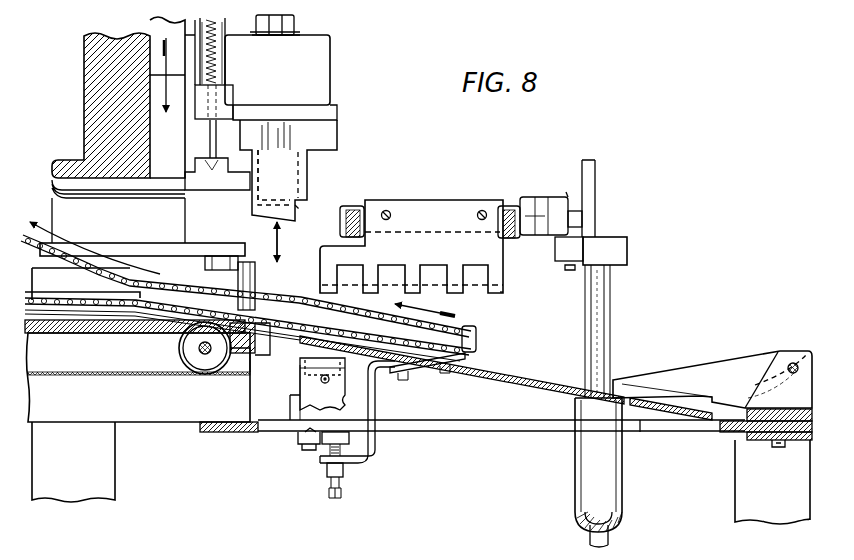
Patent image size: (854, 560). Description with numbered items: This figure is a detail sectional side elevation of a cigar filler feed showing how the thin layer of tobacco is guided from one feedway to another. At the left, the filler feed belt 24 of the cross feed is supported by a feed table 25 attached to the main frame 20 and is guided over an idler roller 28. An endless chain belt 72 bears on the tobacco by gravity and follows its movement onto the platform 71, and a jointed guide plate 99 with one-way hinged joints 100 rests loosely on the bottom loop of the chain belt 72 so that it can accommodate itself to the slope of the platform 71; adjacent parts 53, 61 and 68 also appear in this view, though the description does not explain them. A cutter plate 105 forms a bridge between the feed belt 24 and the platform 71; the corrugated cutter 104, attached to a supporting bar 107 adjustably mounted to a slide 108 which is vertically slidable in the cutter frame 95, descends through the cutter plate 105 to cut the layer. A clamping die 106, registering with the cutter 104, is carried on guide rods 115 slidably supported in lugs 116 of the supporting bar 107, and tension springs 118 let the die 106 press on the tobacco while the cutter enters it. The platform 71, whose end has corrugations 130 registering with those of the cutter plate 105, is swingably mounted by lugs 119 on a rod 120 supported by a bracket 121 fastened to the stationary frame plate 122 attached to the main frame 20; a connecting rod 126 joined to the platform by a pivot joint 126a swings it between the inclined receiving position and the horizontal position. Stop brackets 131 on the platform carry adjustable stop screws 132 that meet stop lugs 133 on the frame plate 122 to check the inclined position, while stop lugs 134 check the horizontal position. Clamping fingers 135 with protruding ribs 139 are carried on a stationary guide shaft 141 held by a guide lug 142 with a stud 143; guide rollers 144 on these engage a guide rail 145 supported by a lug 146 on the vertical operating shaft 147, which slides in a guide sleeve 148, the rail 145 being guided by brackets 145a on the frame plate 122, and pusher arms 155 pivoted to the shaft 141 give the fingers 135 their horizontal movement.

The main frame 20 is at (110, 484).
The filler feed belt 24 is at (195, 372).
The feed table 25 is at (128, 374).
The idler roller 28 is at (182, 352).
The guide block 53 is at (246, 270).
The post 61 is at (210, 262).
The rail 68 is at (158, 248).
The platform 71 is at (502, 378).
The endless chain belt 72 is at (100, 268).
The cutter frame 95 is at (88, 58).
The jointed guide plate 99 is at (438, 326).
The hinged joints 100 is at (296, 296).
The corrugated cutter 104 is at (328, 135).
The cutter plate 105 is at (248, 345).
The clamping die 106 is at (258, 205).
The supporting bar 107 is at (338, 110).
The slide 108 is at (152, 24).
The guide rods 115 is at (216, 140).
The lugs 116 is at (232, 95).
The tension springs 118 is at (222, 56).
The lugs 119 is at (728, 357).
The rod 120 is at (798, 362).
The bracket 121 is at (765, 380).
The stationary frame plate 122 is at (200, 428).
The connecting rod 126 is at (302, 402).
The pivot joint 126a is at (345, 378).
The corrugations 130 is at (305, 380).
The stop brackets 131 is at (375, 408).
The adjustable stop screws 132 is at (342, 492).
The stop lugs 133 is at (320, 448).
The stop lugs 134 is at (298, 440).
The clamping fingers 135 is at (458, 193).
The protruding ribs 139 is at (498, 292).
The stationary guide shaft 141 is at (342, 218).
The guide lug 142 is at (550, 190).
The stud 143 is at (583, 218).
The guide rollers 144 is at (568, 196).
The guide rail 145 is at (557, 246).
The brackets 145a is at (592, 185).
The lug 146 is at (628, 248).
The vertical operating shaft 147 is at (612, 298).
The guide sleeve 148 is at (622, 491).
The pusher arms 155 is at (354, 206).